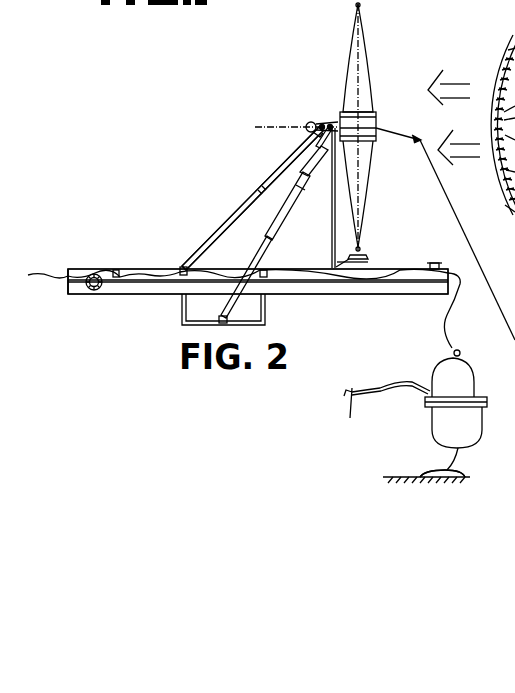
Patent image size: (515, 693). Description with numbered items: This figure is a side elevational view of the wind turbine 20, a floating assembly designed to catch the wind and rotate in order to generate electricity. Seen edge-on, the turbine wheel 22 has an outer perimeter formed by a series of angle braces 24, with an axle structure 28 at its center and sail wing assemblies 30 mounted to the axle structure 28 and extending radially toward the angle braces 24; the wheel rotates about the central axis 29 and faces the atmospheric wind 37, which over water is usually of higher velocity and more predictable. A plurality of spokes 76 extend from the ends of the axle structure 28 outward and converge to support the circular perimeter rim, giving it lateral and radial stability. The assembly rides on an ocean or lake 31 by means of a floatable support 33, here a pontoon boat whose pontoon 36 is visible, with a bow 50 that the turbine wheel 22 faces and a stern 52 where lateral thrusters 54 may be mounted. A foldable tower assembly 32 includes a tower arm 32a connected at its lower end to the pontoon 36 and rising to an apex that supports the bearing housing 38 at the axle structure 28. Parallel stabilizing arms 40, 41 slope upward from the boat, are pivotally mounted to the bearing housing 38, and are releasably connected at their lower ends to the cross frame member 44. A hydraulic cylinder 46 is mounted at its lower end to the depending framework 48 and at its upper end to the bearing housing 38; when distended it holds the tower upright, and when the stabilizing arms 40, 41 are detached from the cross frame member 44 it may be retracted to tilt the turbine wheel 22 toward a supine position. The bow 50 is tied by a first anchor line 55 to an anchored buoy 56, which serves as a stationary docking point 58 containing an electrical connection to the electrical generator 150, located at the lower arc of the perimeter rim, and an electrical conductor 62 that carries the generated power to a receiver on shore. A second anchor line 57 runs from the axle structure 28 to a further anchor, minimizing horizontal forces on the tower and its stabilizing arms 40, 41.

The wind turbine 20 is at (327, 40).
The turbine wheel 22 is at (378, 65).
The angle braces 24 is at (360, 6).
The axle structure 28 is at (377, 122).
The central axis 29 is at (263, 126).
The sail wing assemblies 30 is at (358, 88).
The ocean or lake 31 is at (37, 273).
The foldable tower assembly 32 is at (332, 218).
The tower arm 32a is at (501, 218).
The floatable support 33 is at (347, 297).
The pontoon 36 is at (348, 290).
The atmospheric wind 37 is at (470, 83).
The bearing housing 38 is at (311, 123).
The stabilizing arm 40 is at (282, 166).
The stabilizing arm 41 is at (252, 198).
The cross frame member 44 is at (178, 270).
The hydraulic cylinder 46 is at (265, 242).
The depending framework 48 is at (267, 310).
The bow 50 is at (440, 292).
The stern 52 is at (70, 288).
The lateral thrusters 54 is at (100, 290).
The first anchor line 55 is at (447, 332).
The anchored buoy 56 is at (467, 377).
The second anchor line 57 is at (418, 138).
The stationary docking point 58 is at (463, 475).
The electrical conductor 62 is at (367, 380).
The spokes 76 is at (373, 168).
The electrical generator 150 is at (368, 257).